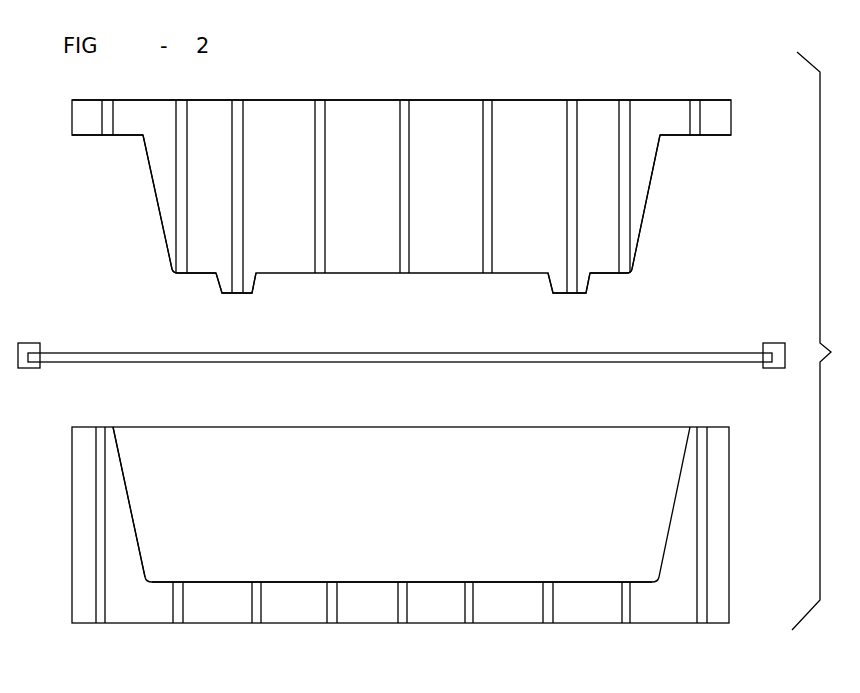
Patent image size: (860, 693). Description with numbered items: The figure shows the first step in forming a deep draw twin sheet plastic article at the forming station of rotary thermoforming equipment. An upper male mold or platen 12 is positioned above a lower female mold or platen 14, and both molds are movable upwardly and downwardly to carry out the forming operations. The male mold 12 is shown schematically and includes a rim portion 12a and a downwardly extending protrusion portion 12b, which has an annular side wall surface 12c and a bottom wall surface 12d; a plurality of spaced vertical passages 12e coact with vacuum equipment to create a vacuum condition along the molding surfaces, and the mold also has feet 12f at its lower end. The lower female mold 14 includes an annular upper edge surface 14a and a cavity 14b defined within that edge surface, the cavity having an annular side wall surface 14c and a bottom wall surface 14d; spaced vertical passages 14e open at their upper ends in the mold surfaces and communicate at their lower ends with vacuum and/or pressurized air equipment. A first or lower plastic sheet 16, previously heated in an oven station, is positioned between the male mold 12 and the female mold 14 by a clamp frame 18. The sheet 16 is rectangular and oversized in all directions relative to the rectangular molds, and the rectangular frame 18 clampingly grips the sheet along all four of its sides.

The upper male mold or platen 12 is at (580, 76).
The rim portion 12a is at (115, 135).
The protrusion portion 12b is at (156, 266).
The annular side wall surface 12c is at (163, 208).
The bottom wall surface 12d is at (612, 276).
The vertical passages 12e is at (486, 100).
The upper mold feet 12f is at (251, 291).
The lower female mold or platen 14 is at (752, 530).
The annular upper edge surface 14a is at (88, 427).
The cavity 14b is at (504, 535).
The annular side wall surface 14c is at (135, 520).
The bottom wall surface 14d is at (378, 582).
The vertical passages 14e is at (467, 605).
The first or lower plastic sheet 16 is at (364, 382).
The clamp frame 18 is at (28, 343).